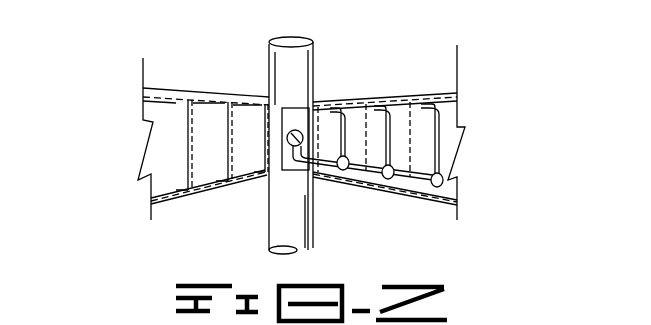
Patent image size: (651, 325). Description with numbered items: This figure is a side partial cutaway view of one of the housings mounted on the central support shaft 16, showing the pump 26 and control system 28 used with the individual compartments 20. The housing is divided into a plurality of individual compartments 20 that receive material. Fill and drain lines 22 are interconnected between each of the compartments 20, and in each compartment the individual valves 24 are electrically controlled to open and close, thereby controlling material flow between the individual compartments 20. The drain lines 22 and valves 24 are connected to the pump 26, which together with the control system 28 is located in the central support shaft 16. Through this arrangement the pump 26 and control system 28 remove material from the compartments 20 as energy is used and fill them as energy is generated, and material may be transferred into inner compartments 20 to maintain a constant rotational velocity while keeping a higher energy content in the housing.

The central support shaft 16 is at (283, 228).
The compartments 20 is at (215, 112).
The fill and drain lines 22 is at (443, 93).
The valves 24 is at (436, 186).
The pump 26 is at (290, 146).
The control system 28 is at (299, 113).